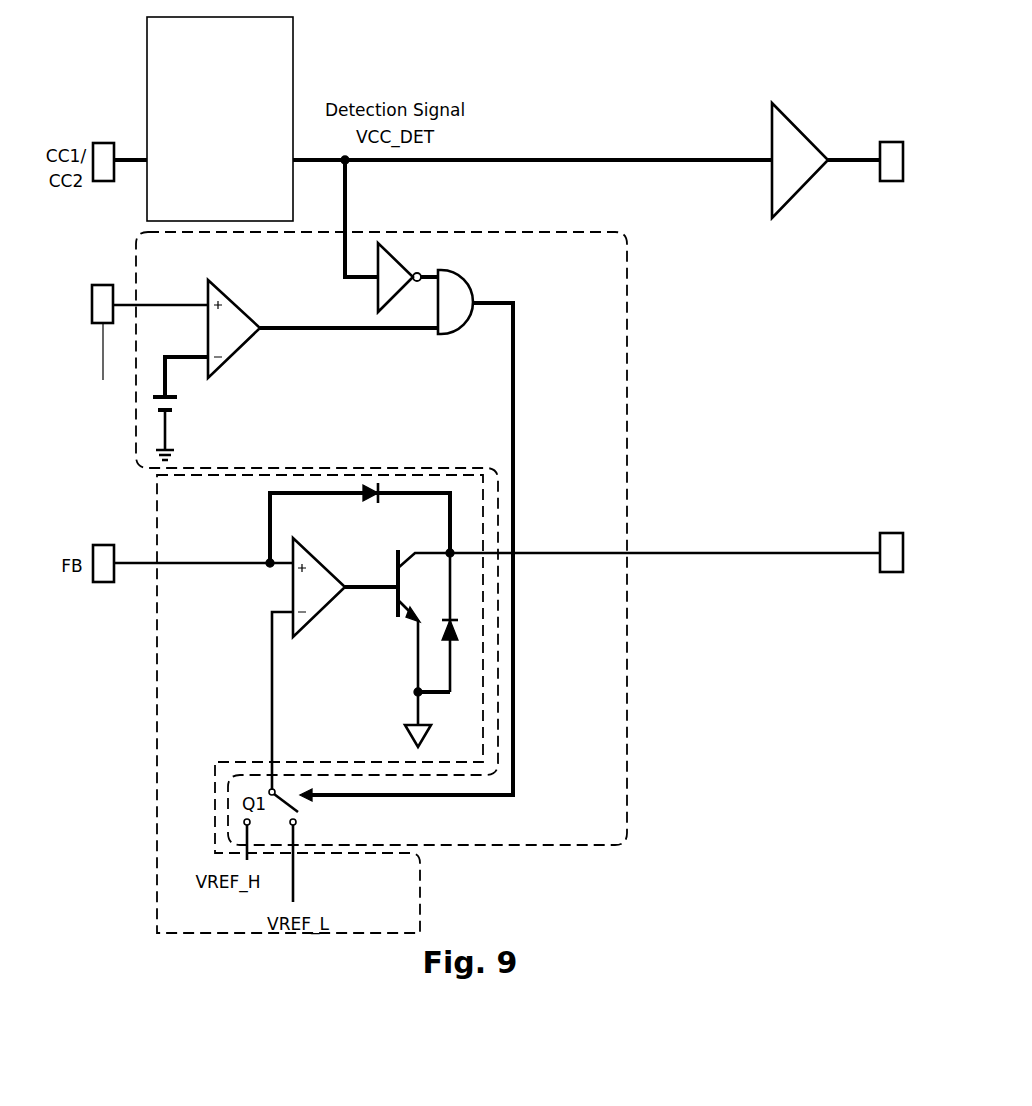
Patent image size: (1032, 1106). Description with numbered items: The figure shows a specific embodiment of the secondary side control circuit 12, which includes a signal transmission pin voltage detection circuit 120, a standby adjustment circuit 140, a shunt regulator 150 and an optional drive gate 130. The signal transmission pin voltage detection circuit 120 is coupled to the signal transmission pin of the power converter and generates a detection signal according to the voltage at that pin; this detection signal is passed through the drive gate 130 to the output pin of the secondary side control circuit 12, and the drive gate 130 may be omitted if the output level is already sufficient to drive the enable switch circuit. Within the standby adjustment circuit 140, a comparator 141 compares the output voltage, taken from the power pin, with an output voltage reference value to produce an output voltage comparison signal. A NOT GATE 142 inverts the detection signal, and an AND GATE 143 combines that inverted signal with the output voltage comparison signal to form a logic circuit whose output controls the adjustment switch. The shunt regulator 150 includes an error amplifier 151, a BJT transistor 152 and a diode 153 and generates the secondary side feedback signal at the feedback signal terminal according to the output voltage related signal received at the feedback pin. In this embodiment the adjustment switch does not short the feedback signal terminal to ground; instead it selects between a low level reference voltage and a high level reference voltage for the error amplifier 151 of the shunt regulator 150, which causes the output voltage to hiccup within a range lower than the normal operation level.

The secondary side control circuit 12 is at (836, 54).
The signal transmission pin voltage detection circuit 120 is at (206, 208).
The drive gate 130 is at (770, 181).
The standby adjustment circuit 140 is at (631, 358).
The comparator 141 is at (237, 300).
The NOT GATE 142 is at (378, 283).
The AND GATE 143 is at (472, 283).
The shunt regulator 150 is at (194, 515).
The error amplifier 151 is at (327, 566).
The BJT transistor 152 is at (656, 640).
The diode 153 is at (452, 641).